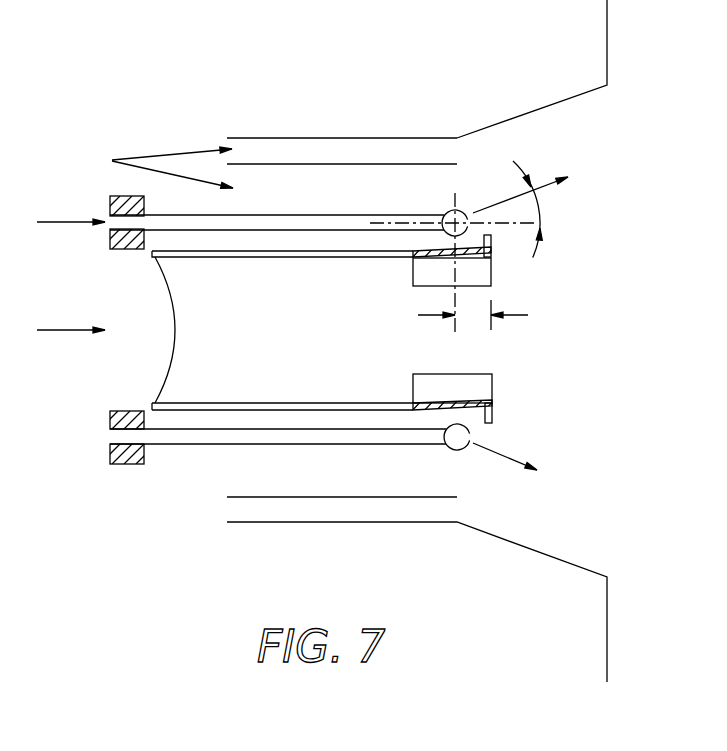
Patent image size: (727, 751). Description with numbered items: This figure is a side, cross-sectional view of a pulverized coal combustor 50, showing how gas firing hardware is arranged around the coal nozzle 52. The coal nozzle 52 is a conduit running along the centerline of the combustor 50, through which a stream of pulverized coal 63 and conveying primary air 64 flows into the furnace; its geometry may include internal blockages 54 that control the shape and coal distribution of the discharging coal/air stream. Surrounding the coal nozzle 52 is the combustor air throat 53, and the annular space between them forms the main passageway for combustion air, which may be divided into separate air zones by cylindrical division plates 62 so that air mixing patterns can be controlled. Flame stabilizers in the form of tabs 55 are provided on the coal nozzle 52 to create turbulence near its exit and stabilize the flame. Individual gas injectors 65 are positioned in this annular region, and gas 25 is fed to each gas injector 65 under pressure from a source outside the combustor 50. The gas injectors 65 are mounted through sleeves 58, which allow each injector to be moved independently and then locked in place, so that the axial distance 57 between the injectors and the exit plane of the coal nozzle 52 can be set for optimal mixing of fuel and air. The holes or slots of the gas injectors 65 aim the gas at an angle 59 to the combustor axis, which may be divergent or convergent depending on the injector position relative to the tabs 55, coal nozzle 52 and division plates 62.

The gas 25 is at (70, 223).
The combustor 50 is at (518, 60).
The coal nozzle 52 is at (430, 406).
The combustor air throat 53 is at (482, 128).
The internal blockages 54 is at (491, 272).
The tabs 55 is at (492, 420).
The axial distance 57 is at (473, 316).
The sleeves 58 is at (133, 465).
The angle 59 is at (540, 205).
The cylindrical division plates 62 is at (283, 162).
The stream of pulverized coal 63 is at (70, 332).
The conveying primary air 64 is at (155, 166).
The gas injectors 65 is at (337, 220).